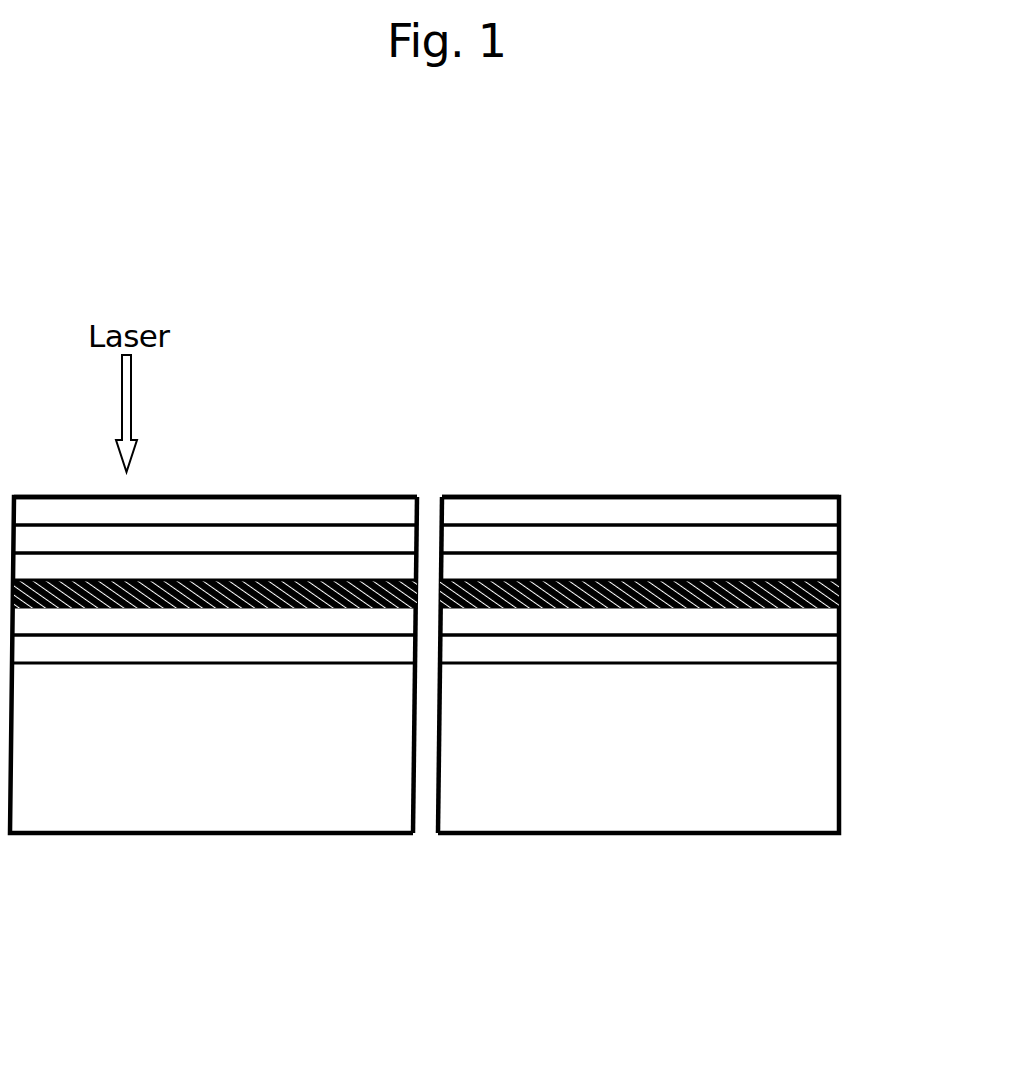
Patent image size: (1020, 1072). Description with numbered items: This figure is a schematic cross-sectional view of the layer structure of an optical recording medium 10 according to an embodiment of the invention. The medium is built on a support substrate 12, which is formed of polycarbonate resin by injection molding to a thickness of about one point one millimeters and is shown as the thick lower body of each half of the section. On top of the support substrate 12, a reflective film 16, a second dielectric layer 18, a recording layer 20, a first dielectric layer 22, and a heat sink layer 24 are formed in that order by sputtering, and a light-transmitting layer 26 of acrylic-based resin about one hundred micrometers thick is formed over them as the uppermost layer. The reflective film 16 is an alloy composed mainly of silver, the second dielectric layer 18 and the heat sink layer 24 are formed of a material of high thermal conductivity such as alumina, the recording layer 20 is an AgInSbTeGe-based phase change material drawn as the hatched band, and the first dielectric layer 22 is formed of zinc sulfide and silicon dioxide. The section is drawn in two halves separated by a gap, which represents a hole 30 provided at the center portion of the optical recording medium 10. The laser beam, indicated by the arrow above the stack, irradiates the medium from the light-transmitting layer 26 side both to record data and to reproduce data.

The optical recording medium 10 is at (655, 341).
The support substrate 12 is at (840, 745).
The reflective film 16 is at (842, 650).
The second dielectric layer 18 is at (842, 622).
The recording layer 20 is at (842, 594).
The first dielectric layer 22 is at (842, 567).
The heat sink layer 24 is at (842, 540).
The light-transmitting layer 26 is at (842, 512).
The hole 30 is at (425, 842).